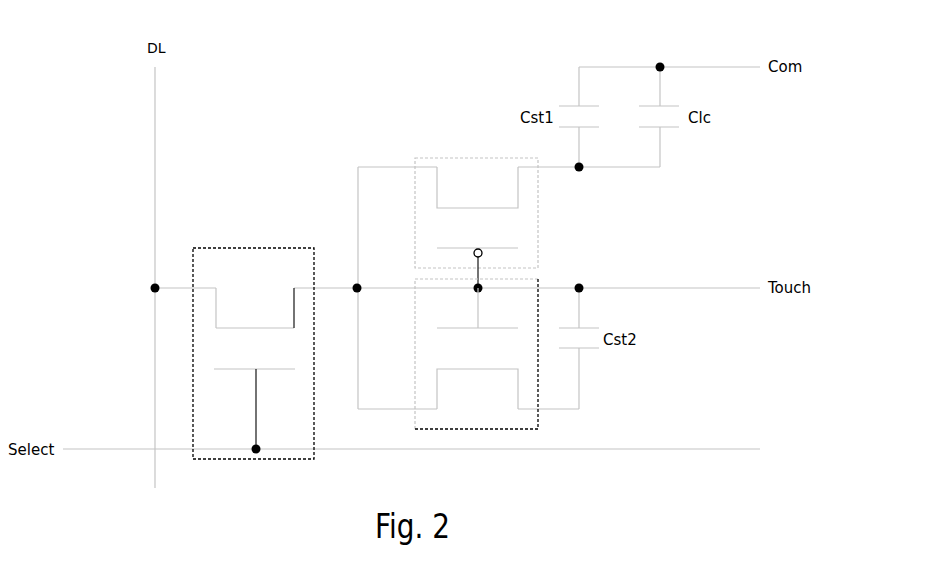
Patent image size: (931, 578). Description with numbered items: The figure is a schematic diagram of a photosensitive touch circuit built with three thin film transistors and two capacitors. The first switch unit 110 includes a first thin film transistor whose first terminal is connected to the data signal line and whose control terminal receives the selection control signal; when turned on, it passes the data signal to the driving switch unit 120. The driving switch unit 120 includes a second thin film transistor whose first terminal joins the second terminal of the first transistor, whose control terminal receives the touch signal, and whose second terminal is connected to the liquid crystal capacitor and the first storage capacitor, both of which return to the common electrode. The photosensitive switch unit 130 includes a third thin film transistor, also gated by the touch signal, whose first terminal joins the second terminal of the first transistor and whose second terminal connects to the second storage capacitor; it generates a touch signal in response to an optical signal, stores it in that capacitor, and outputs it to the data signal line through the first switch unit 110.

The first switch unit 110 is at (262, 324).
The driving switch unit 120 is at (467, 192).
The photosensitive switch unit 130 is at (524, 356).